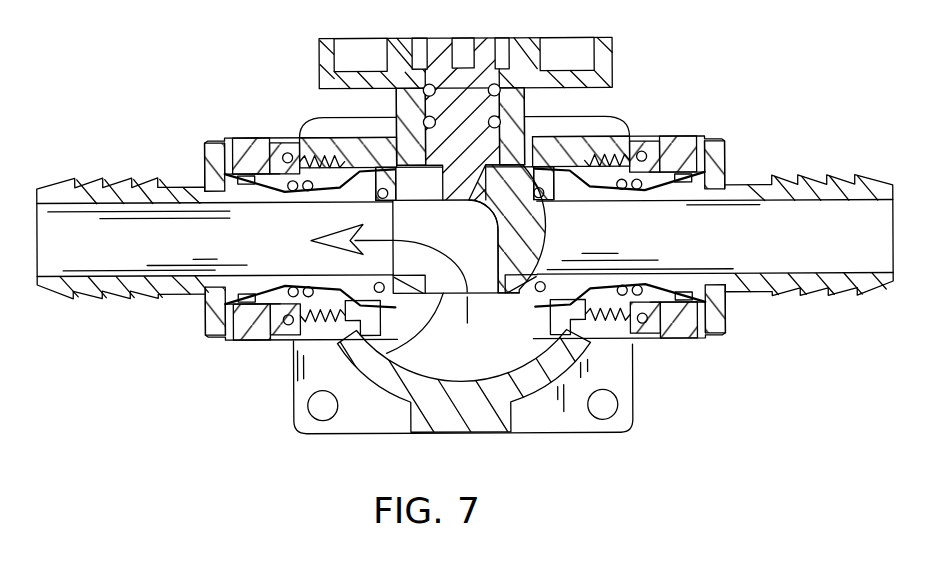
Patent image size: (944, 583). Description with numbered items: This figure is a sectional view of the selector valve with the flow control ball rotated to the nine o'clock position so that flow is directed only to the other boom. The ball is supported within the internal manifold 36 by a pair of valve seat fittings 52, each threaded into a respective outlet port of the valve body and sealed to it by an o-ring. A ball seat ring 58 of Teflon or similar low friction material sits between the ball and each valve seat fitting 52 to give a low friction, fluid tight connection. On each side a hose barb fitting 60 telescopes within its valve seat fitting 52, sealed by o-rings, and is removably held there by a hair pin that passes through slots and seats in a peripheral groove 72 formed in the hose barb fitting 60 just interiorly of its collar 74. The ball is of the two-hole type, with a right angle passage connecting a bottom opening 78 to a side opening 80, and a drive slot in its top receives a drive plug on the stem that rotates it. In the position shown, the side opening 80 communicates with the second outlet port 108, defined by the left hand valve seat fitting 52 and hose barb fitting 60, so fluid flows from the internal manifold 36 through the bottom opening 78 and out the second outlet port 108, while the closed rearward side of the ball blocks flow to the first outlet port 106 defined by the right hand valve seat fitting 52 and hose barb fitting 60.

The internal manifold 36 is at (507, 343).
The valve seat fitting 52 is at (690, 126).
The ball seat ring 58 is at (537, 180).
The hose barb fitting 60 is at (172, 183).
The peripheral groove 72 is at (680, 298).
The collar 74 is at (725, 147).
The bottom opening 78 is at (360, 318).
The side opening 80 is at (392, 295).
The first outlet port 106 is at (620, 345).
The second outlet port 108 is at (377, 222).